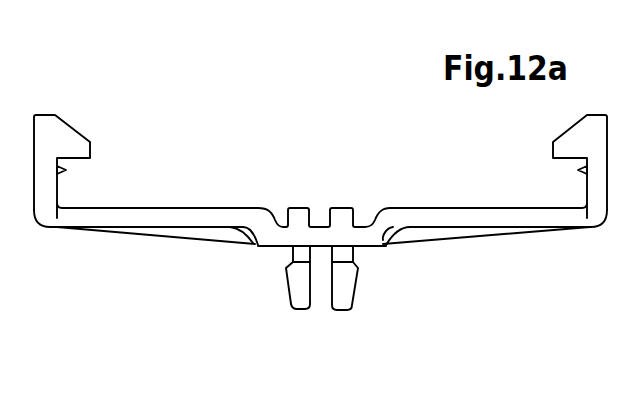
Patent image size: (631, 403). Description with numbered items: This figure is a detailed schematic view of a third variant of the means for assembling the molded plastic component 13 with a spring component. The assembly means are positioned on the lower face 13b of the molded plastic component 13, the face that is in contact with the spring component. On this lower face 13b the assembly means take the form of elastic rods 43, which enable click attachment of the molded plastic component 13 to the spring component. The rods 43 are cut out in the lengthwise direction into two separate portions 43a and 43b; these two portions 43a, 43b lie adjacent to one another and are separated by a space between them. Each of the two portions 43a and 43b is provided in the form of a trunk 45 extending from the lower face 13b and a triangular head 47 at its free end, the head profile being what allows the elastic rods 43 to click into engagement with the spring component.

The molded plastic component 13 is at (207, 131).
The lower face 13b is at (116, 229).
The elastic rods 43 is at (321, 199).
The trunk 45 is at (298, 252).
The first portion 43a is at (300, 284).
The second portion 43b is at (345, 285).
The triangular head 47 is at (302, 300).